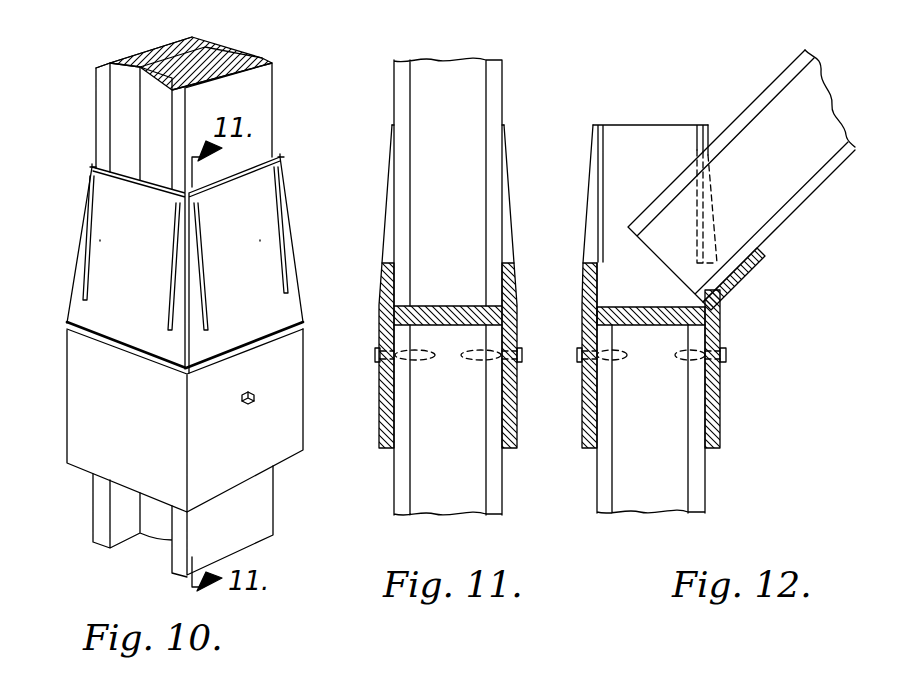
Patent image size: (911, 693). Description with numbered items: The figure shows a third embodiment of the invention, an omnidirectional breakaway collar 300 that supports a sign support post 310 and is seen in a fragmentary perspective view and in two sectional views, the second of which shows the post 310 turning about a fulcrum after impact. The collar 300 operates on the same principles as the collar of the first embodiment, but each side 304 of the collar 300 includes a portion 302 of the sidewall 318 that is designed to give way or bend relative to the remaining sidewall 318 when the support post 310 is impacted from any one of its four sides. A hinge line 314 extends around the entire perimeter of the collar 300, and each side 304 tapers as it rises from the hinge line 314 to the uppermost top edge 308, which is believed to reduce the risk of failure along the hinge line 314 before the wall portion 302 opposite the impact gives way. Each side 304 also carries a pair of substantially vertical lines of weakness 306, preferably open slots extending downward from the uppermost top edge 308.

In FIG. 10, the breakaway collar 300 is at (93, 450).
In FIG. 11, the breakaway collar 300 is at (514, 433).
In FIG. 12, the breakaway collar 300 is at (717, 427).
In FIG. 10, the portion of the sidewall 302 is at (188, 257).
In FIG. 10, the side of the collar 304 is at (202, 271).
In FIG. 11, the side of the collar 304 is at (443, 276).
In FIG. 12, the side of the collar 304 is at (683, 266).
In FIG. 10, the lines of weakness 306 is at (177, 232).
In FIG. 10, the uppermost top edge 308 is at (118, 176).
In FIG. 11, the uppermost top edge 308 is at (504, 126).
In FIG. 10, the support post 310 is at (271, 70).
In FIG. 11, the support post 310 is at (403, 72).
In FIG. 12, the support post 310 is at (600, 124).
In FIG. 10, the hinge line 314 is at (165, 367).
In FIG. 11, the hinge line 314 is at (379, 345).
In FIG. 12, the hinge line 314 is at (728, 295).
In FIG. 10, the sidewall 318 is at (227, 345).
In FIG. 11, the sidewall 318 is at (383, 280).
In FIG. 12, the sidewall 318 is at (581, 265).